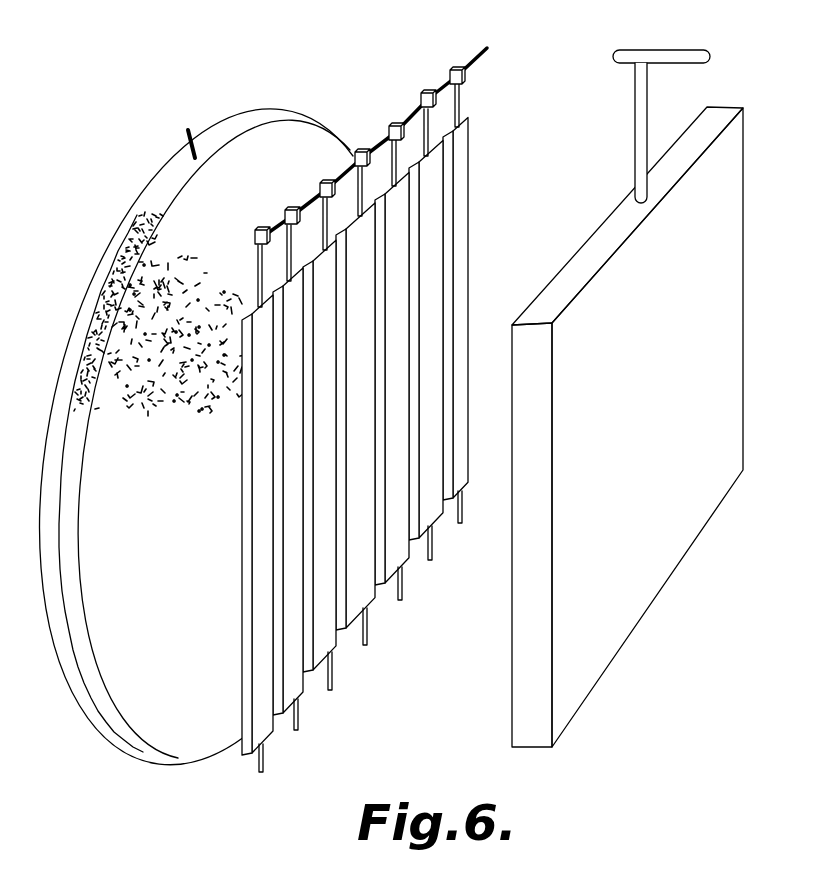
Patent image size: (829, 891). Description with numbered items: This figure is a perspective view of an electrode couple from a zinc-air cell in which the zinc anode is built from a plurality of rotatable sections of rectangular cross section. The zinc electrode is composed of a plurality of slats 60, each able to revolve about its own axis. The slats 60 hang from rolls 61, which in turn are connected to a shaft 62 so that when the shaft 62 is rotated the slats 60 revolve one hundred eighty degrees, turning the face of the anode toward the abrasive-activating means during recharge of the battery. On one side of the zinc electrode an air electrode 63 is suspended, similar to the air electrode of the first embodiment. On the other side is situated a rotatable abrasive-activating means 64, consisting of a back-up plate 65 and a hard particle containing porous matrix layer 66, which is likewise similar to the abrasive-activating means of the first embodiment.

The slats 60 is at (262, 437).
The rolls 61 is at (257, 272).
The shaft 62 is at (482, 50).
The air electrode 63 is at (732, 222).
The rotatable abrasive-activating means 64 is at (188, 130).
The back-up plate 65 is at (135, 218).
The hard particle containing porous matrix layer 66 is at (95, 343).